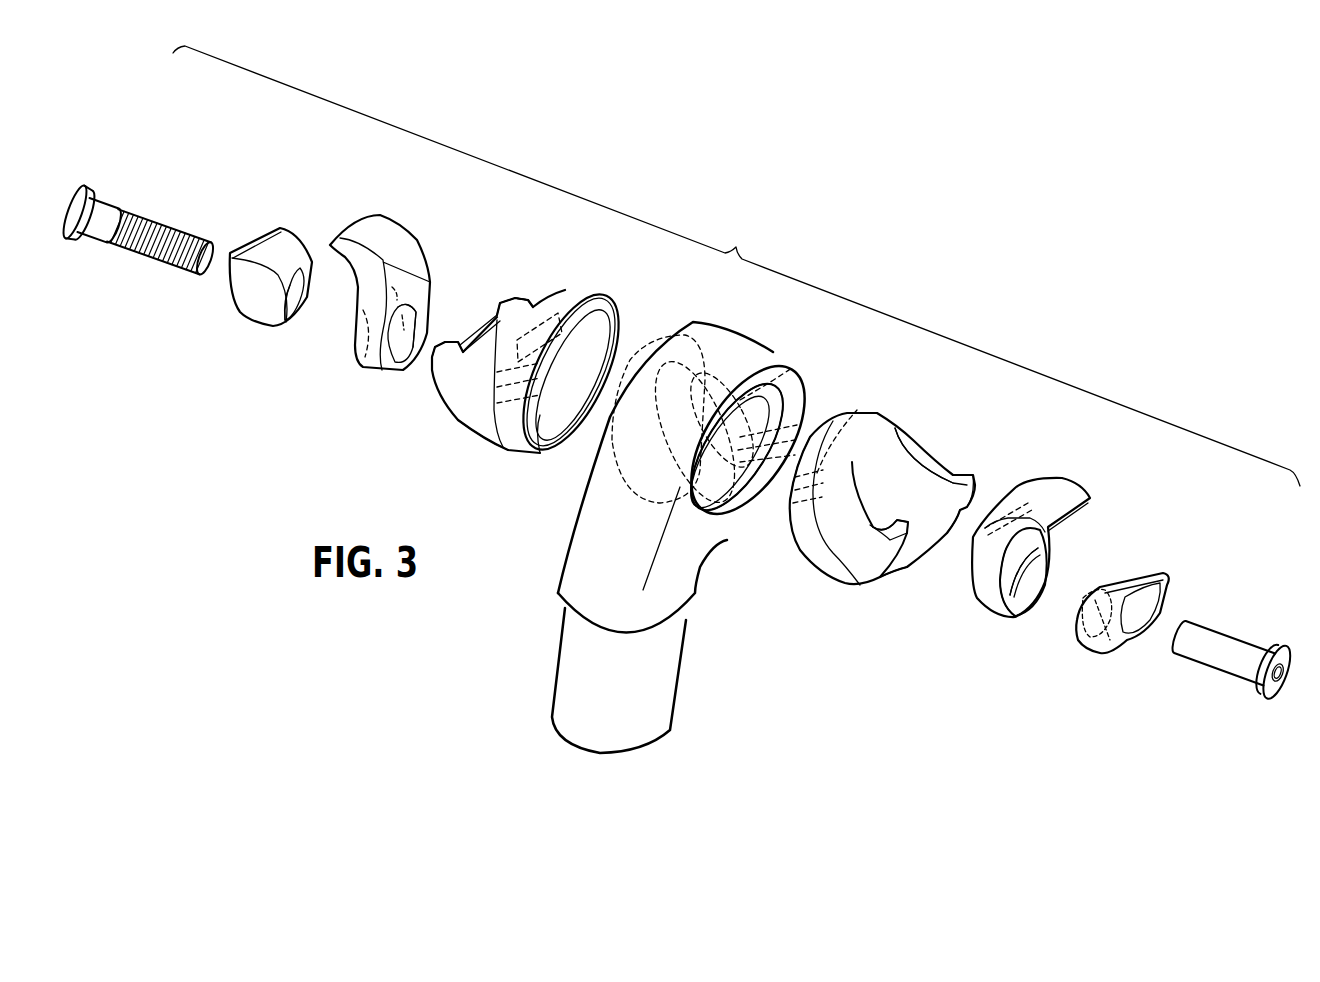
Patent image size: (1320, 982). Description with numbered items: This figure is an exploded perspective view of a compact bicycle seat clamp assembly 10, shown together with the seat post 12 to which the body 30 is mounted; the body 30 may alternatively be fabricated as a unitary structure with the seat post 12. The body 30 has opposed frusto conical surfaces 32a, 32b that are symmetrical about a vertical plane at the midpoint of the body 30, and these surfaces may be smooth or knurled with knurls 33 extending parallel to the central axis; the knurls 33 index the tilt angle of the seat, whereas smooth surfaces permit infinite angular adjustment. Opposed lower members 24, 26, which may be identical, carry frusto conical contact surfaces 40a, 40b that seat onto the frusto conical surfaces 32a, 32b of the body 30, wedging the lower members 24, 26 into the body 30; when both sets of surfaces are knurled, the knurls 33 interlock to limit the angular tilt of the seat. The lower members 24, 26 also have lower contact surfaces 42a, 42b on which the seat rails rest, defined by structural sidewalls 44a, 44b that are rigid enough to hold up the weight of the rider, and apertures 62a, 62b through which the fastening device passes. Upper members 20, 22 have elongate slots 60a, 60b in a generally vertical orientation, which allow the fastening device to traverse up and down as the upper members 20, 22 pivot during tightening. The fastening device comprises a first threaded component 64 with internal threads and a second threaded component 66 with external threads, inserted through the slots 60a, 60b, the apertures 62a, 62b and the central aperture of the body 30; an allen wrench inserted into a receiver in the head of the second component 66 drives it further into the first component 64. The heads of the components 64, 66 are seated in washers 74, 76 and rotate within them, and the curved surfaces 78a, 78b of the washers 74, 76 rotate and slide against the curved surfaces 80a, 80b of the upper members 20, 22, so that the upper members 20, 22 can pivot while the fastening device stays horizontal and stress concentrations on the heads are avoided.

The seat clamp assembly 10 is at (736, 266).
The seat post 12 is at (660, 683).
The upper member 20 is at (1097, 477).
The upper member 22 is at (440, 230).
The lower member 24 is at (997, 423).
The lower member 26 is at (618, 303).
The body 30 is at (650, 287).
The frusto conical surface 32a is at (781, 403).
The frusto conical surface 32b is at (645, 378).
The knurls 33 is at (523, 397).
The frusto conical contact surface 40a is at (802, 527).
The frusto conical contact surface 40b is at (505, 435).
The lower contact surface 42a is at (947, 473).
The lower contact surface 42b is at (518, 300).
The structural sidewall 44a is at (893, 582).
The structural sidewall 44b is at (499, 302).
The elongate slot 60a is at (1027, 612).
The elongate slot 60b is at (403, 373).
The aperture 62a is at (883, 478).
The aperture 62b is at (565, 453).
The first threaded component 64 is at (1287, 633).
The second threaded component 66 is at (102, 165).
The washer 74 is at (1187, 577).
The washer 76 is at (263, 202).
The curved surface 78a is at (1092, 593).
The curved surface 78b is at (270, 330).
The curved surface 80a is at (1020, 587).
The curved surface 80b is at (368, 312).